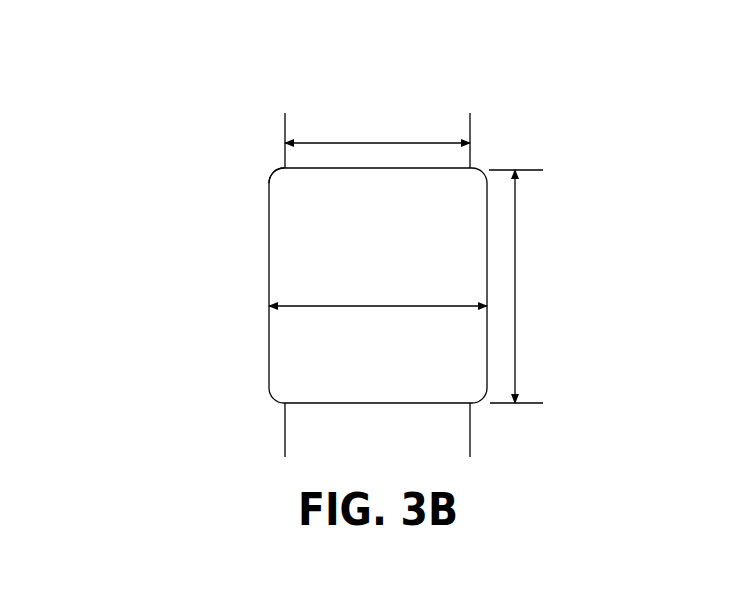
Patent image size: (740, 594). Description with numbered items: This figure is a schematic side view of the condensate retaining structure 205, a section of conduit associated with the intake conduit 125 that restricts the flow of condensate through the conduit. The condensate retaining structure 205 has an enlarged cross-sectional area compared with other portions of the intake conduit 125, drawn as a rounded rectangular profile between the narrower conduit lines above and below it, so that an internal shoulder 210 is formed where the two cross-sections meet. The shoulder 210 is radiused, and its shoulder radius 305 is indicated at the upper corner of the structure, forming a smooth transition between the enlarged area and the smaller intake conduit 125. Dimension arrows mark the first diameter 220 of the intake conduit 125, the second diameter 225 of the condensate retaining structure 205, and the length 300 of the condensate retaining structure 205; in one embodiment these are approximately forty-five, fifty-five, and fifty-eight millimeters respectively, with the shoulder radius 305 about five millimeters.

The condensate retaining structure 205 is at (227, 245).
The intake conduit 125 is at (458, 160).
The shoulder 210 is at (269, 179).
The shoulder radius 305 is at (273, 172).
The first diameter 220 is at (373, 141).
The second diameter 225 is at (322, 303).
The length 300 is at (515, 262).